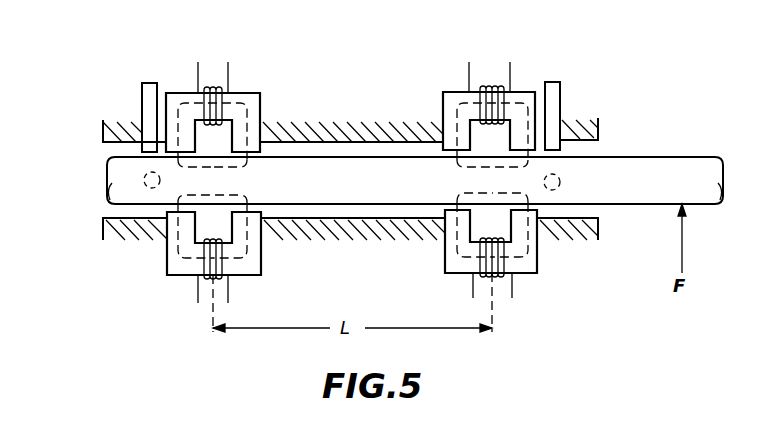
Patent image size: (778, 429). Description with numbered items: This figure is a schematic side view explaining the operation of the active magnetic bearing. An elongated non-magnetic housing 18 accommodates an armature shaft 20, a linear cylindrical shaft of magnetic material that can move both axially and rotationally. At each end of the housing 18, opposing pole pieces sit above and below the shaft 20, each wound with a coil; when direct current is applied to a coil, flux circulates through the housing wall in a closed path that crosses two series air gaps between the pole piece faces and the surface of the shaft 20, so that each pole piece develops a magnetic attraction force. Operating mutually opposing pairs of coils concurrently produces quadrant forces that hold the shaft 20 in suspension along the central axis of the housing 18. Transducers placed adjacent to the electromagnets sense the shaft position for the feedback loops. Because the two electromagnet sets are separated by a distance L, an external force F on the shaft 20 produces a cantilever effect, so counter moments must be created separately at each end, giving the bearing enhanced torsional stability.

The housing 18 is at (378, 137).
The armature shaft 20 is at (682, 158).